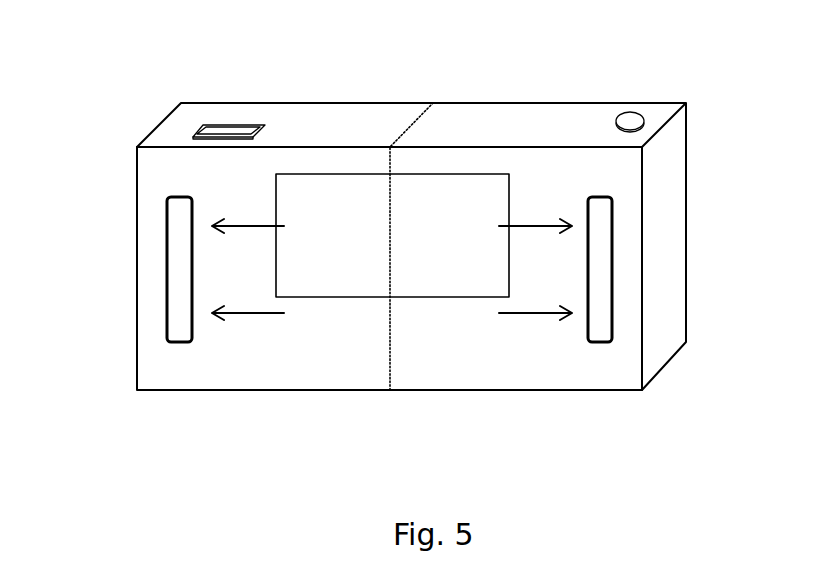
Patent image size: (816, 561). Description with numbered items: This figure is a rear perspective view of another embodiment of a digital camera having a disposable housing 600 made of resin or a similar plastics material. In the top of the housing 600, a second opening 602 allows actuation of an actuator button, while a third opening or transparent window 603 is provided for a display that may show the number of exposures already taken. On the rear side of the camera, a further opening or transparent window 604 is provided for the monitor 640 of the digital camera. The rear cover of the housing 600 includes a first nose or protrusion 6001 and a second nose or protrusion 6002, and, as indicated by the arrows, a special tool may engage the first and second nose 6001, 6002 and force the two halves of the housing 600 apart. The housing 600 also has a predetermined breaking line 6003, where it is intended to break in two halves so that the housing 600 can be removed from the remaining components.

The disposable housing 600 is at (533, 125).
The second opening 602 is at (638, 112).
The third opening or transparent window 603 is at (227, 127).
The third opening or transparent window 604 is at (325, 298).
The monitor 640 is at (445, 275).
The first nose or protrusion 6001 is at (177, 330).
The second nose or protrusion 6002 is at (602, 323).
The predetermined breaking line 6003 is at (418, 120).